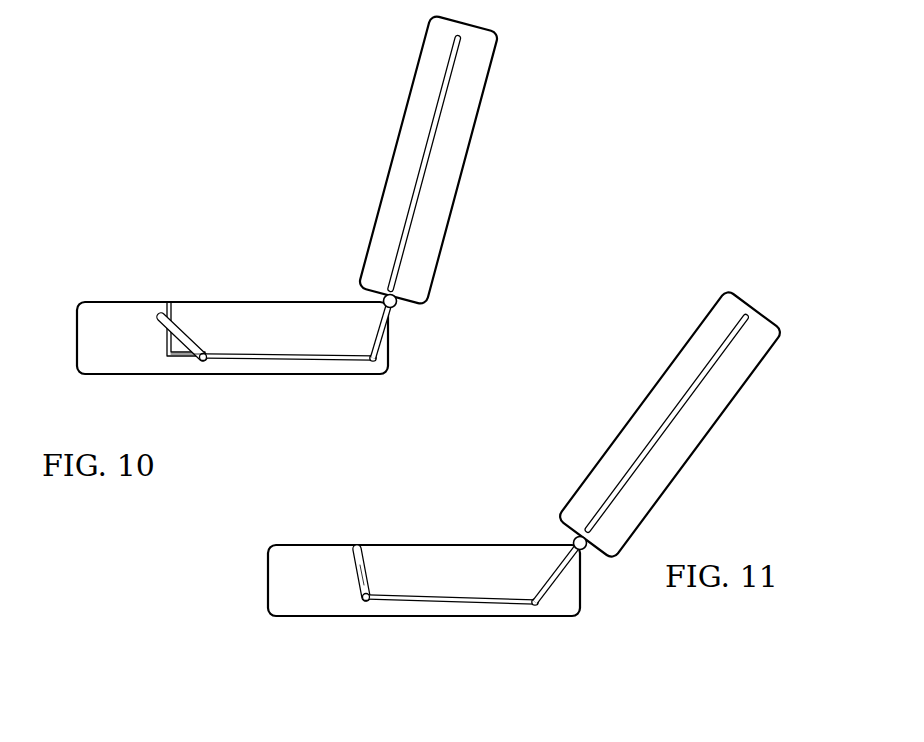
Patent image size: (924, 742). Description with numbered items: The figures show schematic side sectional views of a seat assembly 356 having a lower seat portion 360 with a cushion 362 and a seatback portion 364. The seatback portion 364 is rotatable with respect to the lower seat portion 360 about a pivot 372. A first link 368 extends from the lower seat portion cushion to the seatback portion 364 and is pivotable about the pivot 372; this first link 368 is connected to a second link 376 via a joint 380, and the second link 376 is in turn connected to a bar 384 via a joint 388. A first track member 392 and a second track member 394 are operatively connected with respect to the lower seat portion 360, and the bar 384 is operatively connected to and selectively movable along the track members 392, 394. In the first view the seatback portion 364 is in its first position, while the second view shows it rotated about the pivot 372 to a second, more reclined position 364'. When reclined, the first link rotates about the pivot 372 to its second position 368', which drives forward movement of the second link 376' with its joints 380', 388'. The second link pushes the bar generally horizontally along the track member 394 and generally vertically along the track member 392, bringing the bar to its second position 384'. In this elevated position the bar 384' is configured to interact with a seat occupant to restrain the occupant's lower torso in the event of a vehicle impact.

In FIG. 10, the seat assembly 356 is at (302, 93).
In FIG. 11, the seat assembly 356 is at (609, 349).
In FIG. 10, the lower seat portion 360 is at (90, 325).
In FIG. 11, the lower seat portion 360 is at (280, 588).
In FIG. 10, the cushion 362 is at (124, 310).
In FIG. 11, the cushion 362 is at (308, 548).
In FIG. 10, the seatback portion 364 is at (470, 160).
In FIG. 11, the seatback portion 364' is at (683, 424).
In FIG. 10, the first link 368 is at (387, 163).
In FIG. 11, the first link 368' is at (629, 423).
In FIG. 10, the pivot 372 is at (398, 308).
In FIG. 11, the pivot 372 is at (572, 540).
In FIG. 10, the second link 376 is at (290, 392).
In FIG. 11, the second link 376' is at (453, 629).
In FIG. 10, the joint 380 is at (417, 354).
In FIG. 11, the joint 380' is at (581, 602).
In FIG. 10, the bar 384 is at (197, 293).
In FIG. 11, the bar 384' is at (347, 536).
In FIG. 10, the joint 388 is at (222, 392).
In FIG. 11, the joint 388' is at (335, 628).
In FIG. 10, the first track member 392 is at (170, 312).
In FIG. 11, the first track member 392 is at (370, 560).
In FIG. 10, the second track member 394 is at (185, 372).